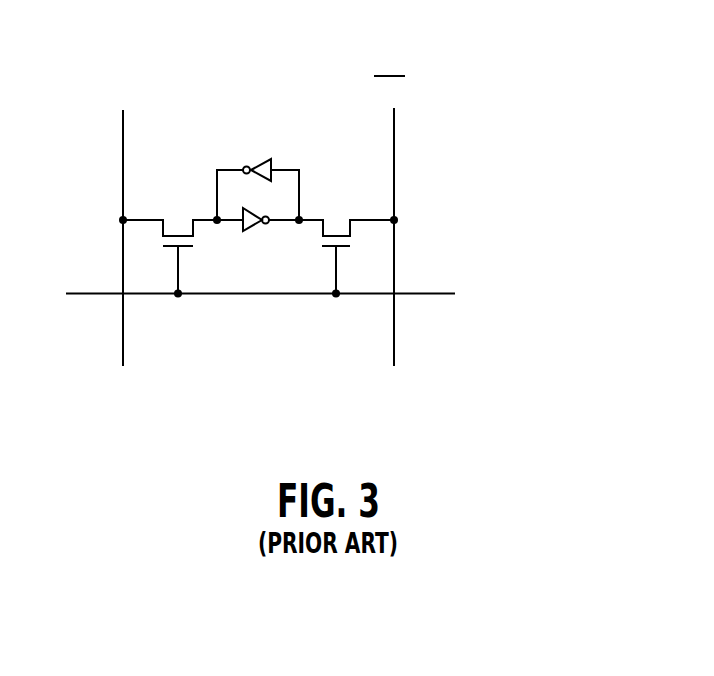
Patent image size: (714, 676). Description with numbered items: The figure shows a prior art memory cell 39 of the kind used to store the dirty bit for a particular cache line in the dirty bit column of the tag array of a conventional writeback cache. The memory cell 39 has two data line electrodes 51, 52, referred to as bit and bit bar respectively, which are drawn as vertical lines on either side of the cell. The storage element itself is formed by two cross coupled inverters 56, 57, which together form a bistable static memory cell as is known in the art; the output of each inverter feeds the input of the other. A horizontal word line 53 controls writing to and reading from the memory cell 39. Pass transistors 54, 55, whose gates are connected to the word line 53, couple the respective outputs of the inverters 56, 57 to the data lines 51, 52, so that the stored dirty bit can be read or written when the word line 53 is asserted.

The memory cell 39 is at (476, 80).
The data line electrode 51 is at (124, 340).
The data line electrode 52 is at (393, 340).
The word line 53 is at (426, 293).
The pass transistor 54 is at (180, 219).
The pass transistor 55 is at (335, 220).
The inverter 56 is at (248, 232).
The inverter 57 is at (260, 160).